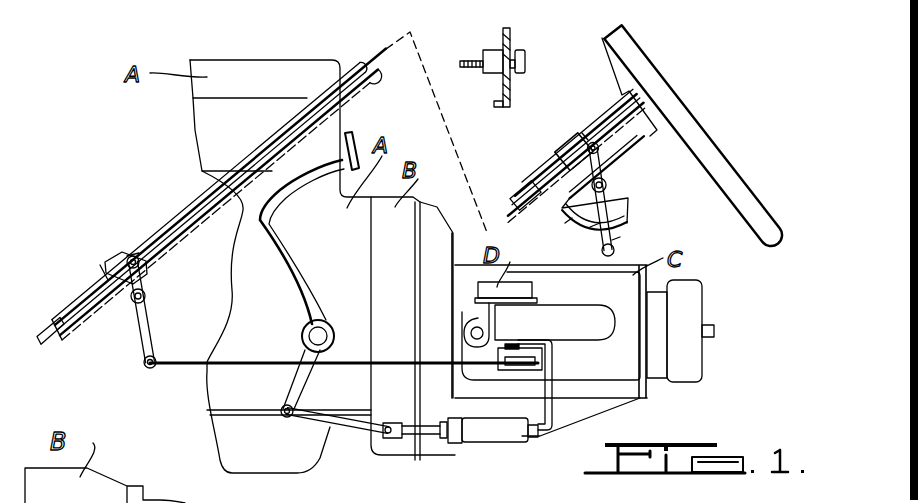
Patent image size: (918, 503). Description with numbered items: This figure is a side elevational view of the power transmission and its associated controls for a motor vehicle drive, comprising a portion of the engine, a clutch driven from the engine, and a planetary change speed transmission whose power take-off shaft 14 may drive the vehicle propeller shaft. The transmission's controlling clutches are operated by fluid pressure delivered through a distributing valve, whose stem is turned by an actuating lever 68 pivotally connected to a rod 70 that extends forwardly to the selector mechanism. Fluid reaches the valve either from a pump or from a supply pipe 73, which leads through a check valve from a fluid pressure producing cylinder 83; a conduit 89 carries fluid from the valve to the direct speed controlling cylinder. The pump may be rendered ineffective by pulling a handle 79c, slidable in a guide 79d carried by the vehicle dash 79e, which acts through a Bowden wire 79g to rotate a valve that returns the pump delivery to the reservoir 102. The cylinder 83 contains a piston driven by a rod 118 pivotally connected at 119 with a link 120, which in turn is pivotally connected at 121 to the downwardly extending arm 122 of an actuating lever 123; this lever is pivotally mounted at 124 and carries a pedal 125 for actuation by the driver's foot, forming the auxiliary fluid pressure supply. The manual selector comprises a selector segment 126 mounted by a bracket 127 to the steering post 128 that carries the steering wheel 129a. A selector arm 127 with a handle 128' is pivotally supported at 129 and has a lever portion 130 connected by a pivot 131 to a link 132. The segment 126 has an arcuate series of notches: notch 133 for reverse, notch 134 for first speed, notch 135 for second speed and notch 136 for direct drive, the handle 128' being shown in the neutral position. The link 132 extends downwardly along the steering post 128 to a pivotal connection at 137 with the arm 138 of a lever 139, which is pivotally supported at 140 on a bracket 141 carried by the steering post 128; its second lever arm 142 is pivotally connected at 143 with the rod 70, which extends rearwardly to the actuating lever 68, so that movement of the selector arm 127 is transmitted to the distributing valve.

The power take-off shaft 14 is at (705, 325).
The actuating lever 68 is at (538, 357).
The rod 70 is at (247, 362).
The supply pipe 73 is at (523, 340).
The handle 79c is at (527, 62).
The guide 79d is at (498, 72).
The vehicle dash 79e is at (500, 42).
The Bowden wire 79g is at (462, 63).
The fluid pressure producing cylinder 83 is at (497, 432).
The conduit 89 is at (489, 318).
The reservoir 102 is at (522, 458).
The rod 118 is at (407, 440).
The pivotal connection 119 is at (388, 423).
The link 120 is at (350, 428).
The pivotal connection 121 is at (282, 417).
The downwardly extending arm 122 is at (290, 385).
The actuating lever 123 is at (290, 277).
The pivot mounting 124 is at (347, 293).
The pedal 125 is at (358, 145).
The selector segment 126 is at (610, 200).
The selector arm 127 is at (573, 140).
The steering post 128 is at (354, 189).
The handle 128' is at (649, 240).
The pivotal support 129 is at (607, 167).
The vehicle steering wheel 129a is at (755, 85).
The lever portion 130 is at (613, 153).
The pivot 131 is at (582, 133).
The link 132 is at (245, 165).
The notch 133 is at (630, 217).
The notch 134 is at (607, 243).
The notch 135 is at (597, 228).
The notch 136 is at (567, 223).
The pivotal connection 137 is at (133, 256).
The arm 138 is at (103, 272).
The lever 139 is at (146, 297).
The pivotal support 140 is at (140, 265).
The bracket 141 is at (117, 257).
The second lever arm 142 is at (150, 323).
The pivotal connection 143 is at (150, 367).